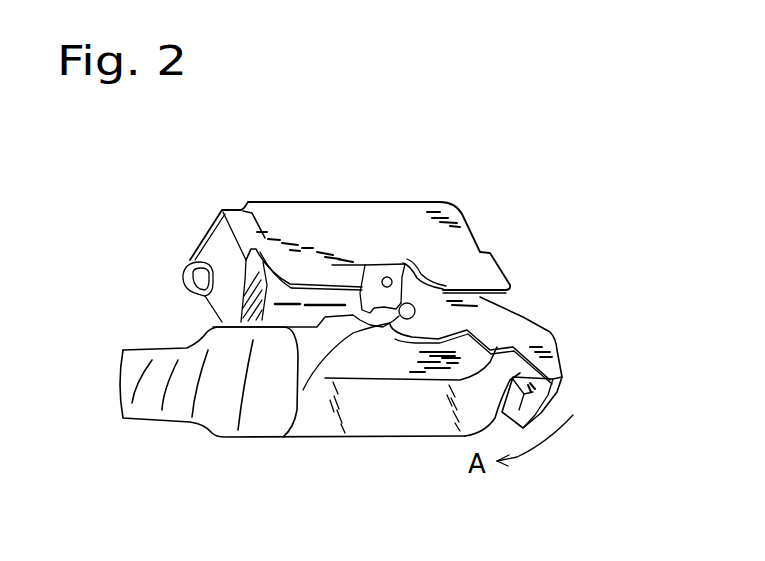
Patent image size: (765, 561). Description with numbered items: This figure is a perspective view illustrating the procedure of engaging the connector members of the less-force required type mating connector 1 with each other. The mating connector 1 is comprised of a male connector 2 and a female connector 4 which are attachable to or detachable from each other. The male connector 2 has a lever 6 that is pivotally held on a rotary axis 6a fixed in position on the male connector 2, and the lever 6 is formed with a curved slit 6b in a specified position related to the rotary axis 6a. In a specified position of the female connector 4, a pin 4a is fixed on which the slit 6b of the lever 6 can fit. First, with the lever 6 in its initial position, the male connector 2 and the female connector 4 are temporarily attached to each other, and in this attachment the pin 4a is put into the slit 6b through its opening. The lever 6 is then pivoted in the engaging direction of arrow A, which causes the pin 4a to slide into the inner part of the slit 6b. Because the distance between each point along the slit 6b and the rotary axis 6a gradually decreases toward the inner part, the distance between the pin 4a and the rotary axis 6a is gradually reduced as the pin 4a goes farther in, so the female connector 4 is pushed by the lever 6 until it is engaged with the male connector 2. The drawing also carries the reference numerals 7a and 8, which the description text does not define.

The less-force required type mating connector 1 is at (552, 168).
The male connector 2 is at (347, 217).
The female connector 4 is at (365, 417).
The pin 4a is at (402, 302).
The lever 6 is at (517, 325).
The rotary axis 6a is at (386, 277).
The curved slit 6b is at (443, 290).
The cable boot 7a is at (303, 390).
The lever operating end 8 is at (557, 340).